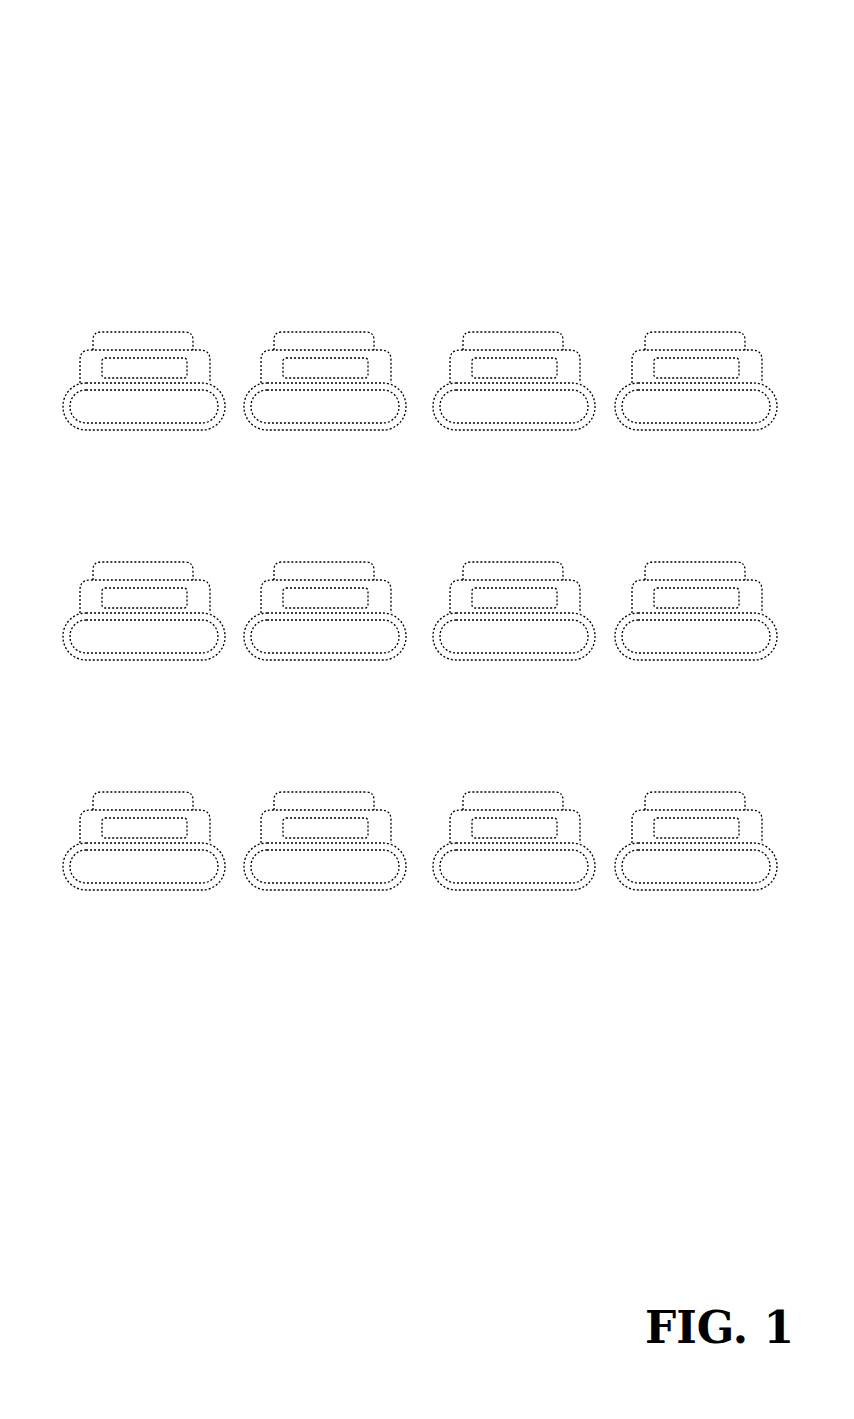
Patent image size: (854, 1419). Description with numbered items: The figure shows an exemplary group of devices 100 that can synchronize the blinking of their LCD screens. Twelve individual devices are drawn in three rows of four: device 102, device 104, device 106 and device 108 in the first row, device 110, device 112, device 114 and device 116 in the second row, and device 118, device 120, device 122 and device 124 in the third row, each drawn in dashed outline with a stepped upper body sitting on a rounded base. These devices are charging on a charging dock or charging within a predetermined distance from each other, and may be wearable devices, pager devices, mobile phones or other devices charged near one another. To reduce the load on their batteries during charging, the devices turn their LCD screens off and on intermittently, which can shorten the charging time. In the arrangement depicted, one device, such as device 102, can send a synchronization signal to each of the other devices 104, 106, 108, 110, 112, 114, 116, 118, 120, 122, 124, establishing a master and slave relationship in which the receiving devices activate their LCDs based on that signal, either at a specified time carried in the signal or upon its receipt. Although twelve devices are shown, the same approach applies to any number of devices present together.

The set of devices 100 is at (104, 50).
The device 102 is at (95, 334).
The device 104 is at (276, 334).
The device 106 is at (465, 334).
The device 108 is at (647, 334).
The device 110 is at (95, 564).
The device 112 is at (276, 564).
The device 114 is at (465, 564).
The device 116 is at (647, 564).
The device 118 is at (95, 794).
The device 120 is at (276, 794).
The device 122 is at (465, 794).
The device 124 is at (647, 794).